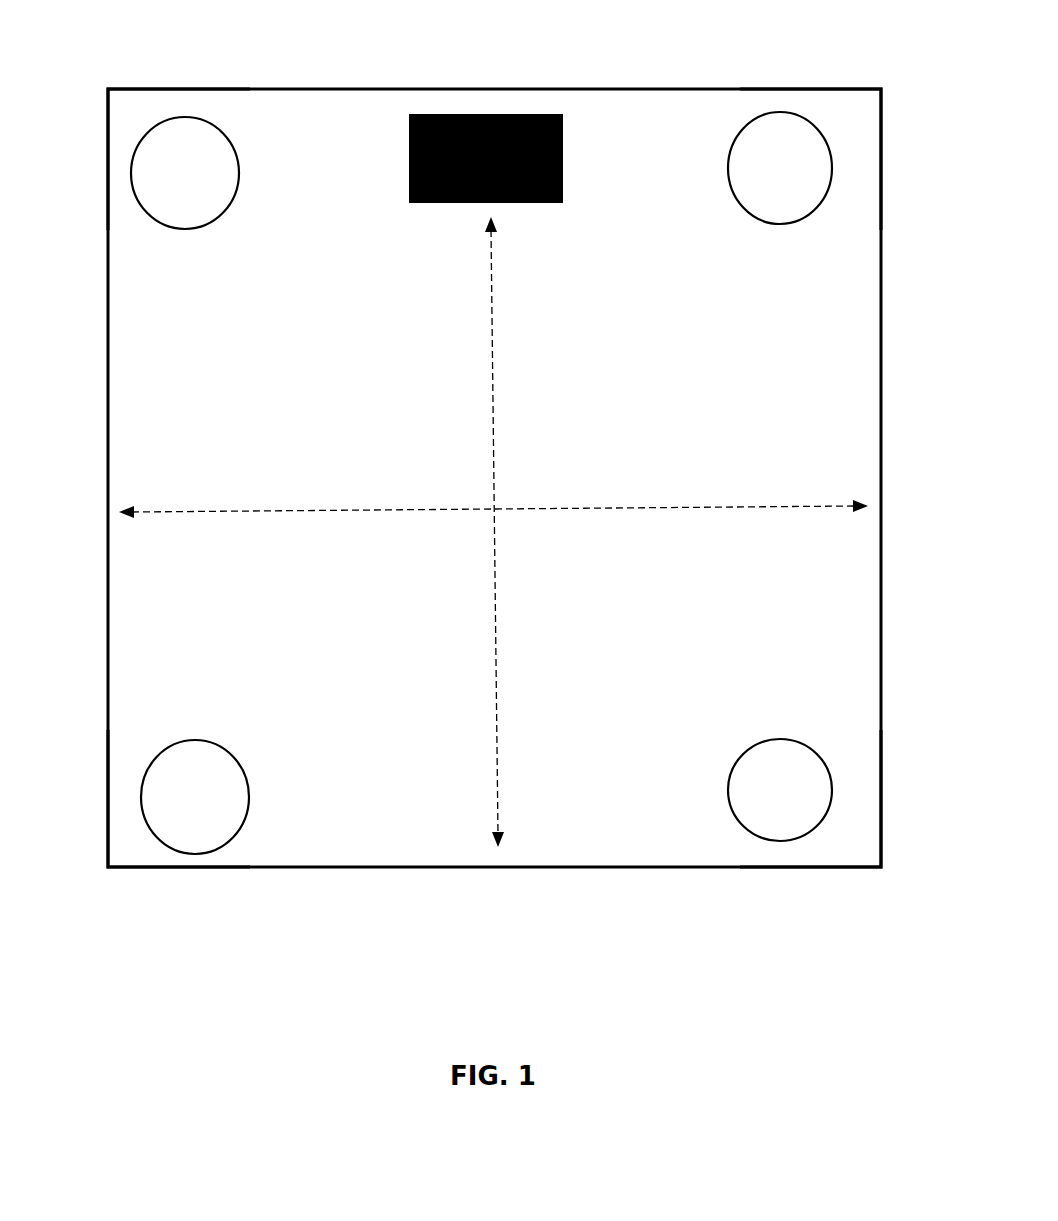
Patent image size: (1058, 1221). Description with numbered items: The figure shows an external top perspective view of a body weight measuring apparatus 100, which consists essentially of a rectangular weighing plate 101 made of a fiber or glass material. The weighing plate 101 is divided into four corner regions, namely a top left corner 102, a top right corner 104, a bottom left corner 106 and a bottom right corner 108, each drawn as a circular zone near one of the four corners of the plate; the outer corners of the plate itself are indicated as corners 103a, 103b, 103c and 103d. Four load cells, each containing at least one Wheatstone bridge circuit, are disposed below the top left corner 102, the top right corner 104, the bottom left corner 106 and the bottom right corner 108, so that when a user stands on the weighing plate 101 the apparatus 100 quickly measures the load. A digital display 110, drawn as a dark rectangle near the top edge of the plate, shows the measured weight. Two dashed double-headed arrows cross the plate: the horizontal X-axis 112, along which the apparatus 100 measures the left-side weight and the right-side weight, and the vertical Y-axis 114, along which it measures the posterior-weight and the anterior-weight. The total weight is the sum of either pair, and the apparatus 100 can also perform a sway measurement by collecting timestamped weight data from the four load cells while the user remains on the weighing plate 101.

The body weight measuring apparatus 100 is at (489, 488).
The weighing plate 101 is at (632, 118).
The top left corner 102 is at (185, 173).
The first corner 103a is at (128, 118).
The second corner 103b is at (865, 110).
The third corner 103c is at (120, 852).
The fourth corner 103d is at (872, 862).
The top right corner 104 is at (780, 168).
The bottom left corner 106 is at (195, 797).
The bottom right corner 108 is at (780, 790).
The digital display 110 is at (546, 114).
The X-axis 112 is at (863, 502).
The Y-axis 114 is at (497, 820).